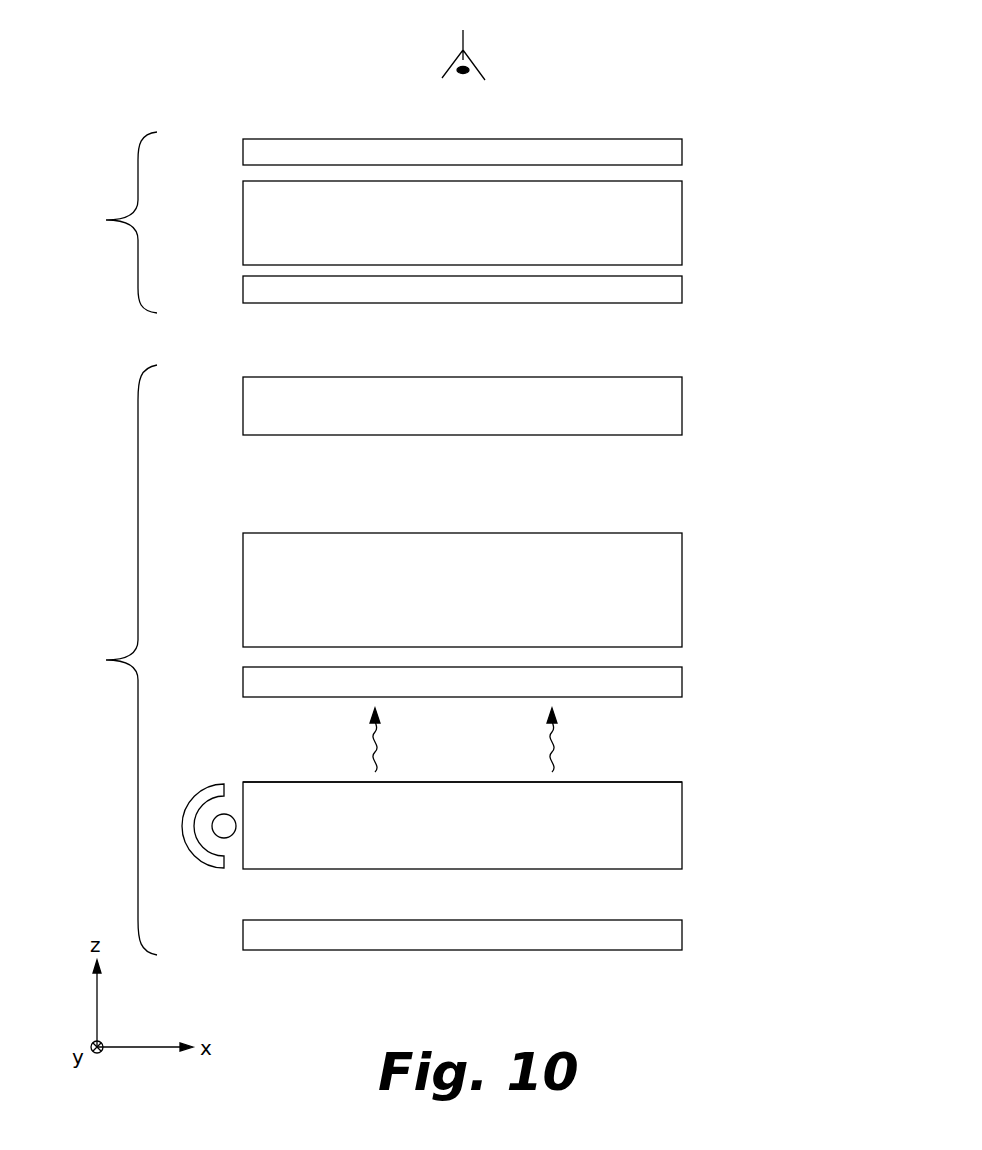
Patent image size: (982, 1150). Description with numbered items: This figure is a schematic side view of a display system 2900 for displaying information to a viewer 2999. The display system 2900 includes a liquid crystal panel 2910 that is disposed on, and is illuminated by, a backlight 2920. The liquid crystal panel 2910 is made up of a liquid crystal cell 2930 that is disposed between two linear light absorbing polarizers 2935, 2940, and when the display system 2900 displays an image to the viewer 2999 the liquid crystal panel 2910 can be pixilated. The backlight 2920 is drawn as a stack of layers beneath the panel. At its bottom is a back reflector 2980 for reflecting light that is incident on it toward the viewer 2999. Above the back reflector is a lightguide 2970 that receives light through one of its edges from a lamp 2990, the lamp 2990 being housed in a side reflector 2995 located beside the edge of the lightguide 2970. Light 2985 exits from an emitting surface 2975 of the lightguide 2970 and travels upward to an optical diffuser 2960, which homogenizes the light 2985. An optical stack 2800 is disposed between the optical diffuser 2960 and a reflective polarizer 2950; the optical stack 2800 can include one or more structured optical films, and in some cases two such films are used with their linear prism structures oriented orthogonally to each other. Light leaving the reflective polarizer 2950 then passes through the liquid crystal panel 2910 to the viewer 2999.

The display system 2900 is at (320, 68).
The viewer 2999 is at (468, 50).
The liquid crystal panel 2910 is at (360, 222).
The linear light absorbing polarizer 2935 is at (683, 153).
The liquid crystal cell 2930 is at (683, 214).
The linear light absorbing polarizer 2940 is at (683, 290).
The backlight 2920 is at (360, 660).
The reflective polarizer 2950 is at (683, 409).
The optical stack 2800 is at (683, 587).
The optical diffuser 2960 is at (683, 680).
The light 2985 is at (372, 750).
The emitting surface 2975 is at (634, 782).
The lightguide 2970 is at (683, 830).
The back reflector 2980 is at (683, 933).
The side reflector 2995 is at (212, 783).
The lamp 2990 is at (228, 838).